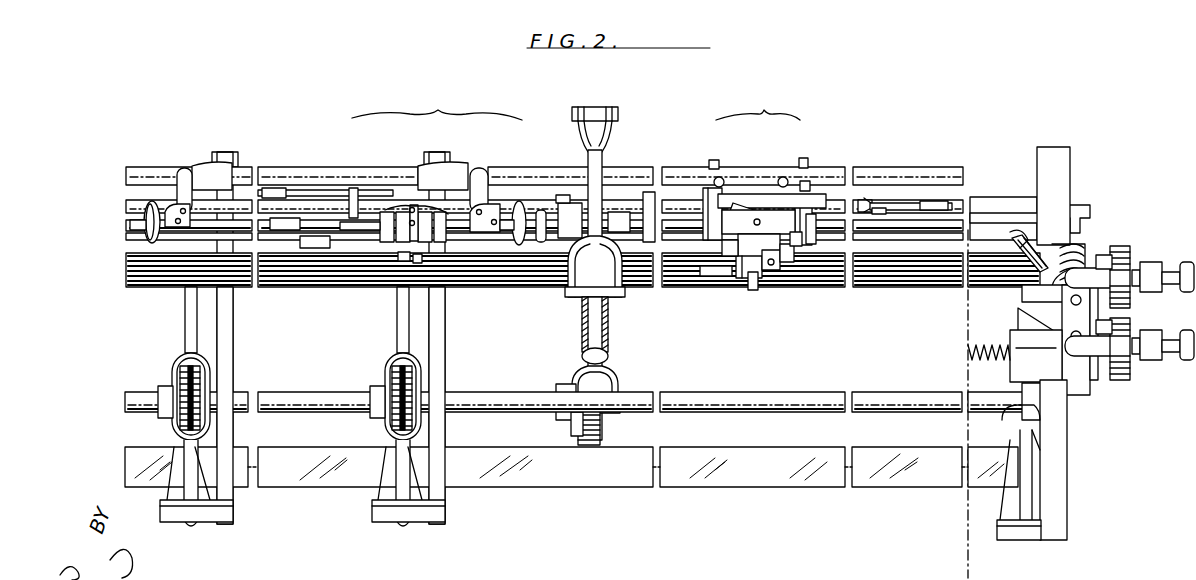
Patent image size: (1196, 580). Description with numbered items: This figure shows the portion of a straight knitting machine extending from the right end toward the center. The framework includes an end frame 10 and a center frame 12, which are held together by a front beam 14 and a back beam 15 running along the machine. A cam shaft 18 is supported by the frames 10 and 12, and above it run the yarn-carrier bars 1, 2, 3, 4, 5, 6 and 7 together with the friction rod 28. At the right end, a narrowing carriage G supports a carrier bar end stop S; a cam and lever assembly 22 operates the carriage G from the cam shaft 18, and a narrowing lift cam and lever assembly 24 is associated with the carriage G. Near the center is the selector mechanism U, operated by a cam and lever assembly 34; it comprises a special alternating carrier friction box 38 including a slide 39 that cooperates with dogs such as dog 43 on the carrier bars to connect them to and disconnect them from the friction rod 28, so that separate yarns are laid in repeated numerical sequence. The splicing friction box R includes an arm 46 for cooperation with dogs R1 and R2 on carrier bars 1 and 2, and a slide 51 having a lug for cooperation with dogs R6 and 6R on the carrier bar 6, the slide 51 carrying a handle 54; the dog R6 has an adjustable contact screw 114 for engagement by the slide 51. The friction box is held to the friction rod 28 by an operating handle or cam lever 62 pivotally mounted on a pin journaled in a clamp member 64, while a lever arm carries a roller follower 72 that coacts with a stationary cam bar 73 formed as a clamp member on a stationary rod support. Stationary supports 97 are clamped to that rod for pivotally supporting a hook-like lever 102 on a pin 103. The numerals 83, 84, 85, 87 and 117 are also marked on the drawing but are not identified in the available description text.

The yarn-carrier bar 1 is at (126, 256).
The yarn-carrier bar 2 is at (126, 261).
The yarn-carrier bar 3 is at (126, 266).
The yarn-carrier bar 4 is at (126, 271).
The yarn-carrier bar 5 is at (126, 276).
The yarn-carrier bar 6 is at (126, 281).
The yarn-carrier bar 7 is at (126, 285).
The end frame 10 is at (1058, 176).
The center frame 12 is at (228, 520).
The front beam 14 is at (720, 480).
The back beam 15 is at (133, 207).
The cam shaft 18 is at (686, 398).
The cam and lever assembly 22 is at (985, 500).
The narrowing lift cam and lever assembly 24 is at (370, 322).
The friction rod 28 is at (955, 218).
The cam and lever assembly 34 is at (632, 152).
The alternating carrier friction box 38 is at (407, 210).
The slide 39 is at (404, 260).
The dog 43 is at (418, 262).
The arm 46 is at (812, 232).
The slide 51 is at (752, 262).
The handle 54 is at (762, 262).
The operating handle or cam lever 62 is at (742, 205).
The clamp member 64 is at (728, 236).
The roller follower 72 is at (788, 190).
The stationary cam bar 73 is at (770, 195).
The carriage body 83 is at (790, 214).
The nut 84 is at (722, 178).
The top bar 85 is at (152, 176).
The mounting posts 87 is at (712, 205).
The stationary support 97 is at (868, 200).
The hook-like lever 102 is at (922, 200).
The pin 103 is at (878, 214).
The adjustable contact screw 114 is at (738, 276).
The top plate 117 is at (722, 194).
The dog R6 is at (716, 272).
The dog 6R is at (772, 256).
The dog R2 is at (786, 250).
The dog R1 is at (798, 240).
The selector mechanism U is at (437, 102).
The splicing friction box R is at (758, 103).
The narrowing carriage G is at (1124, 196).
The carrier bar end stop S is at (1014, 232).